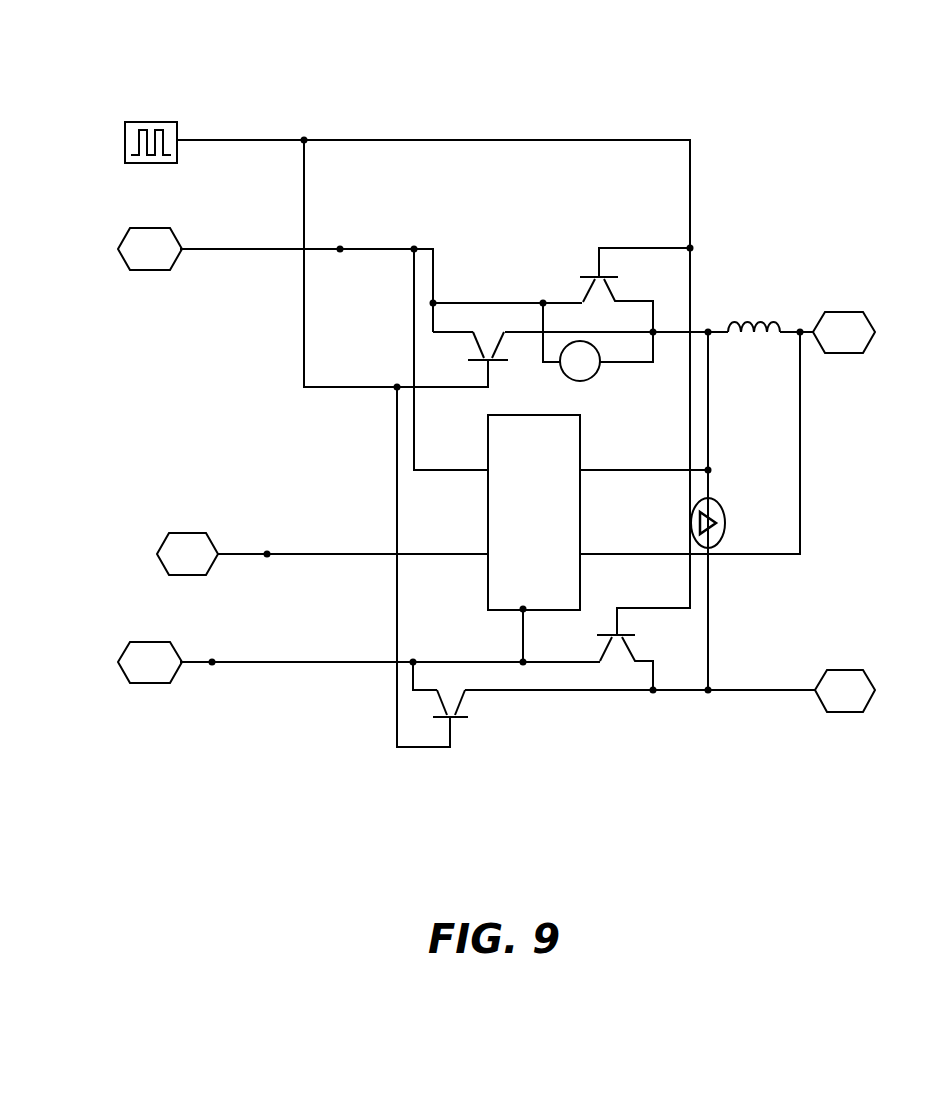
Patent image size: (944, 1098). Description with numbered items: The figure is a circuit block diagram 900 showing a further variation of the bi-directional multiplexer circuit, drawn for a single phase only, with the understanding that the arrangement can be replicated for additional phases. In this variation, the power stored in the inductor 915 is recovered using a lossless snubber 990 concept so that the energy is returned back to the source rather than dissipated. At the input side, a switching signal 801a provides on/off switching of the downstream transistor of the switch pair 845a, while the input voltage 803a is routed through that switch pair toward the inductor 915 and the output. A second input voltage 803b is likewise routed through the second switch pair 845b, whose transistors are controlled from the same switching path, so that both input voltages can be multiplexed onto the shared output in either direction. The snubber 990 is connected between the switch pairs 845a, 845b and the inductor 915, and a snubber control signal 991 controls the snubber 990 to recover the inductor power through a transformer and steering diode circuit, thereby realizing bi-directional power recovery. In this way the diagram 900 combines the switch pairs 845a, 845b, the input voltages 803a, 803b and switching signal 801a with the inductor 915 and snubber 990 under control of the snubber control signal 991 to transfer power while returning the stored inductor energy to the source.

The circuit block diagram 900 is at (849, 27).
The switching signal 801a is at (128, 163).
The input voltage 803a is at (148, 272).
The input voltage 803b is at (163, 690).
The switch pair 845a is at (540, 266).
The switch pair 845b is at (540, 716).
The inductor 915 is at (745, 305).
The lossless snubber 990 is at (480, 575).
The snubber control signal 991 is at (207, 537).